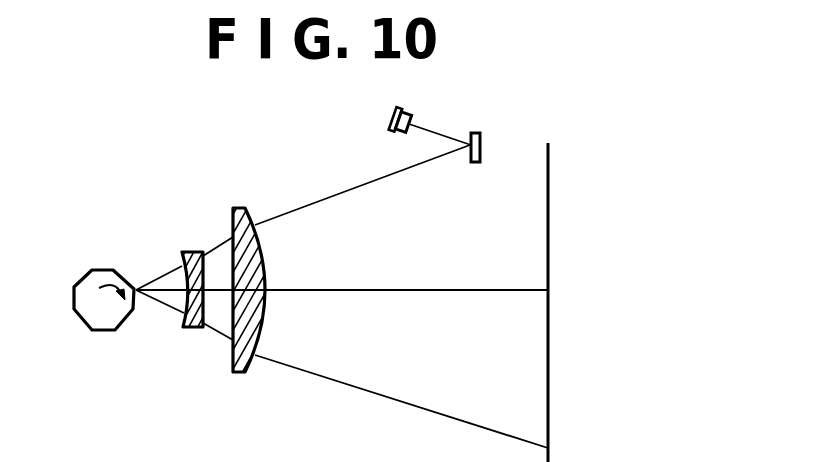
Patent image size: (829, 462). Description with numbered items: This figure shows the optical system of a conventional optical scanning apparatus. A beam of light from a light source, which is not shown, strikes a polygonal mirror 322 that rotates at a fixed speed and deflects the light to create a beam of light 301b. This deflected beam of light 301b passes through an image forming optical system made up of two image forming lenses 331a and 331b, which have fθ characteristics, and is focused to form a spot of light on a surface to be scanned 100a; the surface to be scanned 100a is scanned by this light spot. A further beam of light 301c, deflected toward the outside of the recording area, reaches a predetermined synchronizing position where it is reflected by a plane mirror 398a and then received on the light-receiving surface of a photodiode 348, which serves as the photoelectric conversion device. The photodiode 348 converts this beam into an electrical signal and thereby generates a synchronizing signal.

The polygonal mirror 322 is at (102, 331).
The image forming lens 331a is at (192, 329).
The image forming lens 331b is at (240, 374).
The beam of light 301b is at (338, 380).
The beam of light 301c is at (297, 208).
The photodiode 348 is at (412, 113).
The plane mirror 398a is at (482, 137).
The surface to be scanned 100a is at (548, 167).